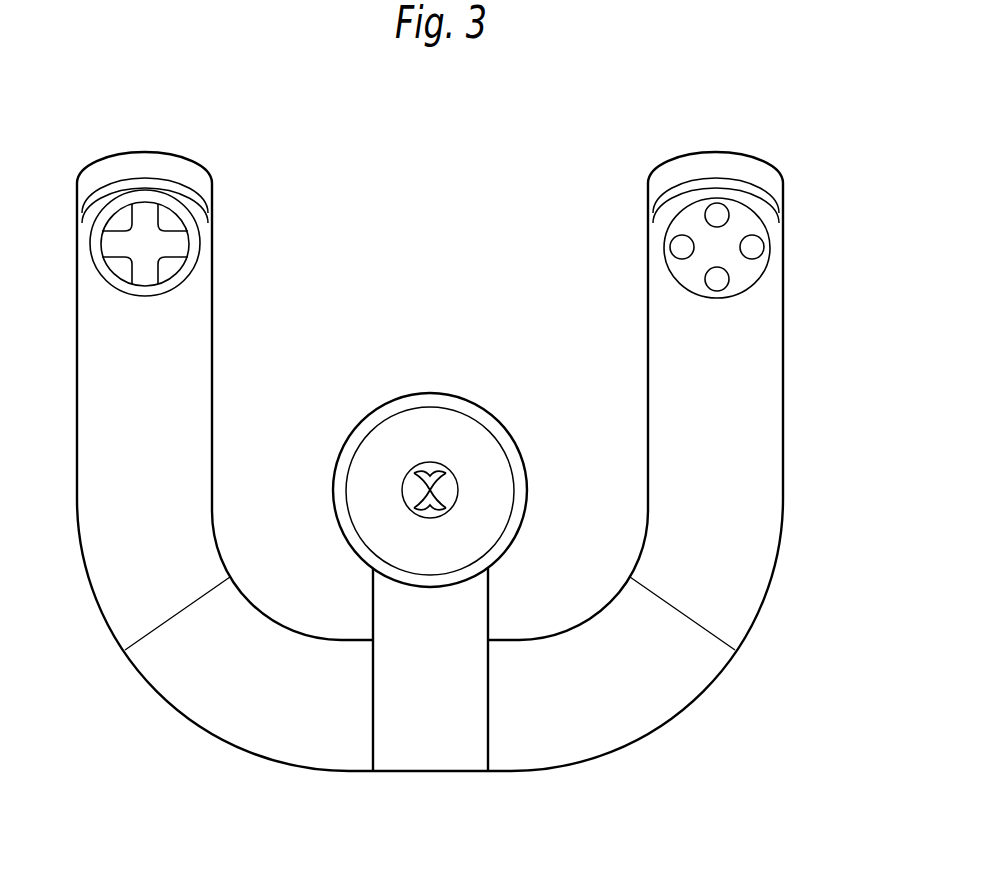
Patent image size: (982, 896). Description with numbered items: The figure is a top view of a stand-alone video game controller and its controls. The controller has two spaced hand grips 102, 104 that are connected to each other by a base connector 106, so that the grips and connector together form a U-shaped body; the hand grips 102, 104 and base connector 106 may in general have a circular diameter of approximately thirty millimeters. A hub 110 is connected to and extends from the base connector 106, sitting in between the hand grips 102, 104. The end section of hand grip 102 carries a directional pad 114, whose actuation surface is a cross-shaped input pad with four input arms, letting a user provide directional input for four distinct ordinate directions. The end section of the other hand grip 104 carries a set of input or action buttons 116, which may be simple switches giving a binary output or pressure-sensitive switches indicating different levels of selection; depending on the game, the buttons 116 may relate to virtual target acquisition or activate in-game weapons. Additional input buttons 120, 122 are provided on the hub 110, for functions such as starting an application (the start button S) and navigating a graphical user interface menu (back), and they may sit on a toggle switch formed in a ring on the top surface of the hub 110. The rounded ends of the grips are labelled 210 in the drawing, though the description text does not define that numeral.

The hand grip 102 is at (210, 378).
The hand grip 104 is at (778, 438).
The base connector 106 is at (532, 765).
The hub 110 is at (433, 407).
The directional pad (D-pad) 114 is at (143, 245).
The input or action buttons 116 is at (722, 207).
The input button 120 is at (357, 477).
The input button 122 is at (503, 475).
The grip end caps 210 is at (148, 165).